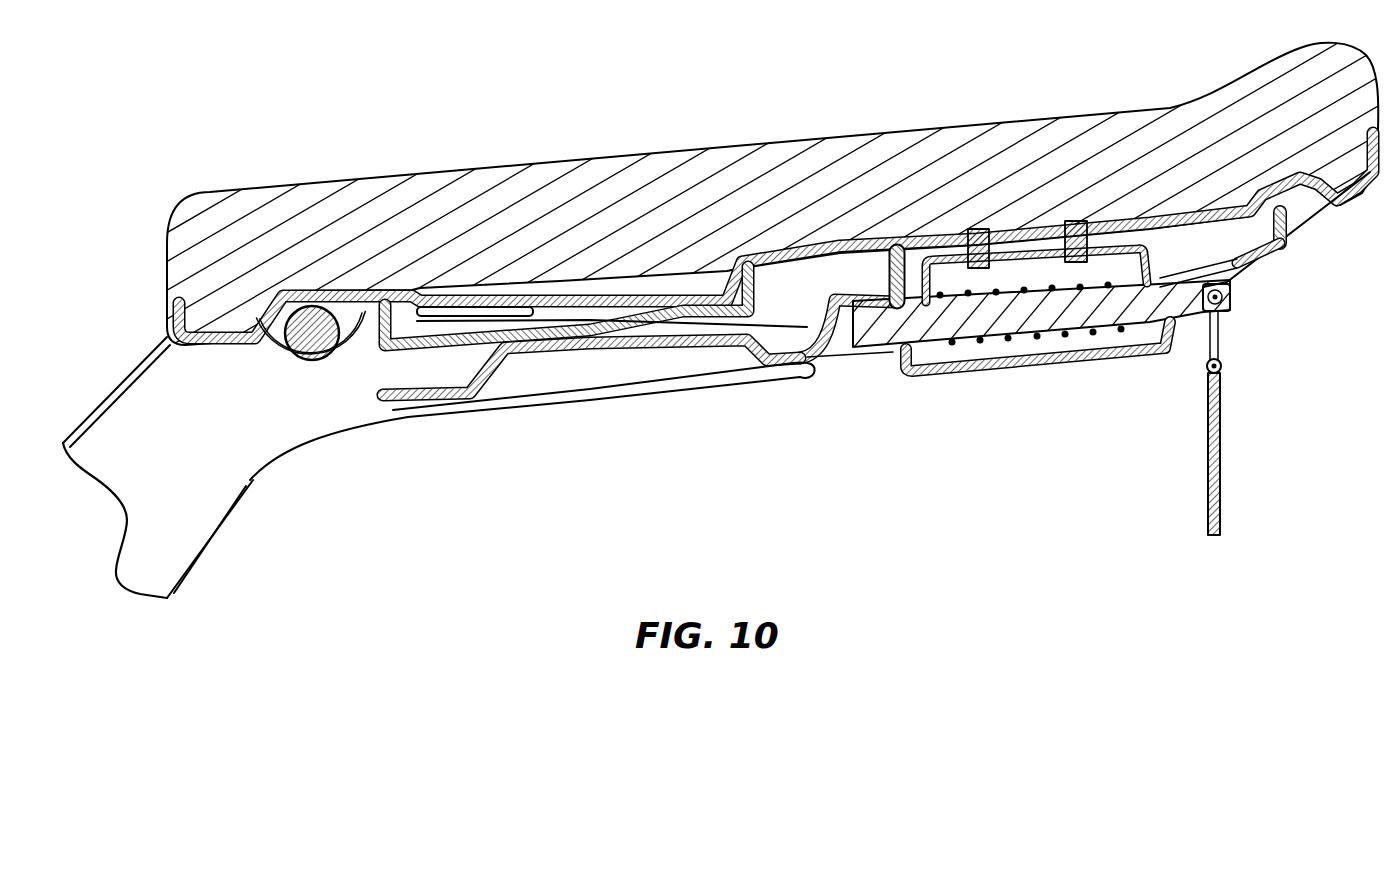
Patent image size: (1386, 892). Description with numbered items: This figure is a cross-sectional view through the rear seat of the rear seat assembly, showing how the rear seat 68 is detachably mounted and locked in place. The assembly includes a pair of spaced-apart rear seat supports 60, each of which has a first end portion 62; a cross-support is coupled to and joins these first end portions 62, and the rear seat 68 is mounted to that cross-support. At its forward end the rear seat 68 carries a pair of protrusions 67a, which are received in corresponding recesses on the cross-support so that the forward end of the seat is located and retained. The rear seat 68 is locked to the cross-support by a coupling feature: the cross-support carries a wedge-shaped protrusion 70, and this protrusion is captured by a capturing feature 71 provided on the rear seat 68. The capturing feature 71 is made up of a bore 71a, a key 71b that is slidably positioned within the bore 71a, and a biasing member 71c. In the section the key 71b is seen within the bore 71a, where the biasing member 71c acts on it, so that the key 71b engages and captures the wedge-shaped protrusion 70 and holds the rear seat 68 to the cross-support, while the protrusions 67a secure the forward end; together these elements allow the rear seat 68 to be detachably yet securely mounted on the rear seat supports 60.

The rear seat support 60 is at (163, 530).
The first end portion 62 is at (360, 403).
The protrusion 67a is at (312, 345).
The rear seat 68 is at (813, 163).
The wedge-shaped protrusion 70 is at (580, 160).
The capturing feature 71 is at (1248, 308).
The bore 71a is at (1040, 367).
The key 71b is at (1105, 322).
The biasing member 71c is at (983, 370).